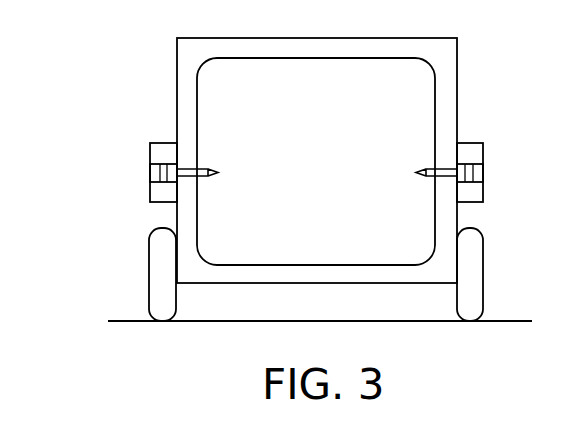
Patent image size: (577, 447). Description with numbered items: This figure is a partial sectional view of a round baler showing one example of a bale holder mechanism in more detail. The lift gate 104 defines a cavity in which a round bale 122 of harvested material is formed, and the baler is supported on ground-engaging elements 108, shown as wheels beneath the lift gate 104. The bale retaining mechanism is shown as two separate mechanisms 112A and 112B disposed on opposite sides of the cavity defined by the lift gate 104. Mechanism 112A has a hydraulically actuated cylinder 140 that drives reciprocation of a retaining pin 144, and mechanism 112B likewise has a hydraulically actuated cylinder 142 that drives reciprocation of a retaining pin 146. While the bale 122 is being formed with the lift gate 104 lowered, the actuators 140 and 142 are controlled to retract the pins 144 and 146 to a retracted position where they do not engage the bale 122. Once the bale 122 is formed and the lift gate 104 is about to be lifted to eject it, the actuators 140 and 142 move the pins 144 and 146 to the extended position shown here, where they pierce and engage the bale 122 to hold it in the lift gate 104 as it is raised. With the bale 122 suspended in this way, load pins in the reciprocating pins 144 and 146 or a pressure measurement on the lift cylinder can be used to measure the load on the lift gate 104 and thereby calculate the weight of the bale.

The lift gate 104 is at (176, 75).
The ground-engaging elements 108 is at (148, 285).
The bale retaining mechanism 112A is at (161, 142).
The bale retaining mechanism 112B is at (470, 142).
The bale 122 is at (331, 181).
The hydraulically actuated cylinder 140 is at (153, 183).
The hydraulically actuated cylinder 142 is at (481, 184).
The retaining pin 144 is at (203, 164).
The retaining pin 146 is at (431, 164).